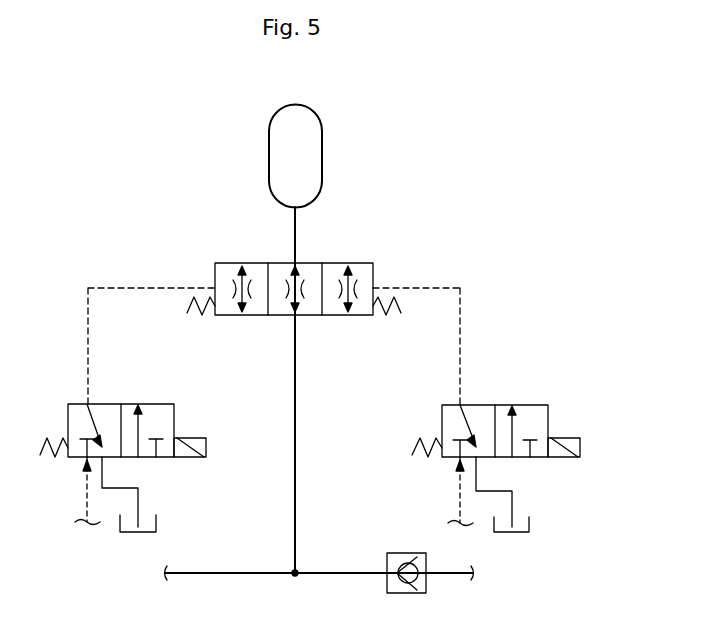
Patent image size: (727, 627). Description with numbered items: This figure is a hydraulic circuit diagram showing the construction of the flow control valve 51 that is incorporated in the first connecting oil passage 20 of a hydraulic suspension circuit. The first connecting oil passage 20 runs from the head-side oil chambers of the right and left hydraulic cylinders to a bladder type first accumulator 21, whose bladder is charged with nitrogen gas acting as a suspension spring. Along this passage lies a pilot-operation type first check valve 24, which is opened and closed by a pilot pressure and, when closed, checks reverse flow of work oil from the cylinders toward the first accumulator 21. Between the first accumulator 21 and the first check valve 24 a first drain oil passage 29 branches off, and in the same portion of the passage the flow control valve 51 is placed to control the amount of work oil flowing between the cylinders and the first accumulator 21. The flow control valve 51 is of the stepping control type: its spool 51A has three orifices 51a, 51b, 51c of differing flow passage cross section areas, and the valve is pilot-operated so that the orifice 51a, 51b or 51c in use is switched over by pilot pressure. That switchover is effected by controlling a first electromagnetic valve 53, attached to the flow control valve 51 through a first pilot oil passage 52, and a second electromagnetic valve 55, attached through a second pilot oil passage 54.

The first connecting oil passage 20 is at (296, 412).
The first accumulator 21 is at (322, 152).
The first check valve 24 is at (410, 553).
The first drain oil passage 29 is at (199, 573).
The flow control valve 51 is at (273, 290).
The orifice 51a is at (233, 290).
The orifice 51b is at (304, 290).
The orifice 51c is at (357, 290).
The spool 51A is at (252, 317).
The first pilot oil passage 52 is at (120, 288).
The first electromagnetic valve 53 is at (110, 404).
The second pilot oil passage 54 is at (440, 288).
The second electromagnetic valve 55 is at (525, 405).